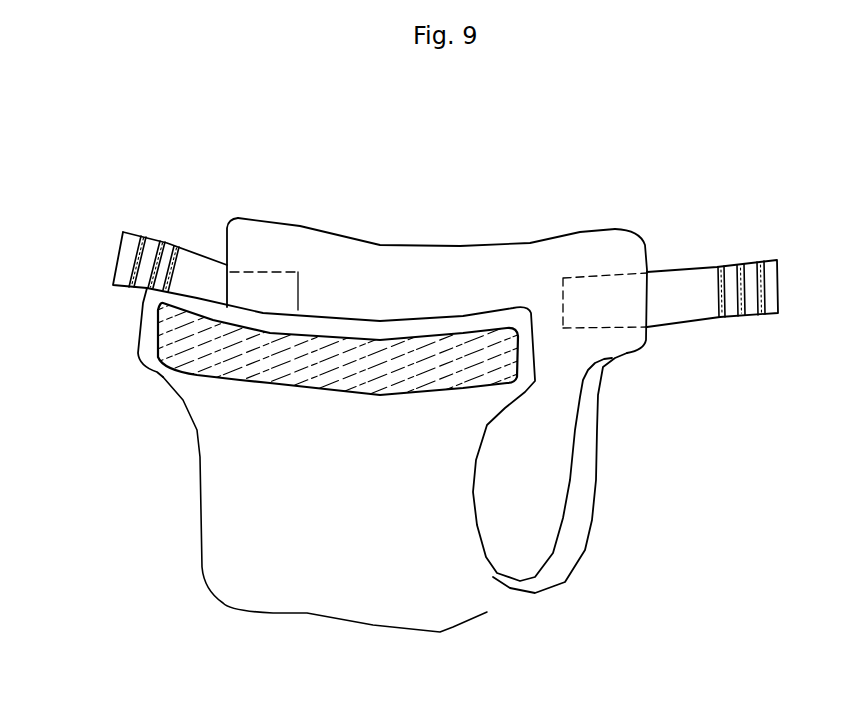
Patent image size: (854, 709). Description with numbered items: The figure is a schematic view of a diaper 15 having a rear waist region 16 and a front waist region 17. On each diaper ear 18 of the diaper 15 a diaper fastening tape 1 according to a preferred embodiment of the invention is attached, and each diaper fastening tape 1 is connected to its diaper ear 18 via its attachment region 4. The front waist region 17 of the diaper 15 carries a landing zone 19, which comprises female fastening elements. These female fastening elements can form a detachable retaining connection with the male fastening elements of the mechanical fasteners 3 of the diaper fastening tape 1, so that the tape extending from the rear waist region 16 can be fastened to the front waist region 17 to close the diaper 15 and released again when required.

The belt 1 is at (681, 293).
The belt end stripes / fastening portion 3 is at (741, 266).
The leg strap loop 4 is at (608, 318).
The holster pouch assembly 15 is at (552, 198).
The pouch flap 16 is at (413, 262).
The pouch body 17 is at (250, 410).
The flap side edges 18 is at (258, 242).
The front pocket 19 is at (190, 355).